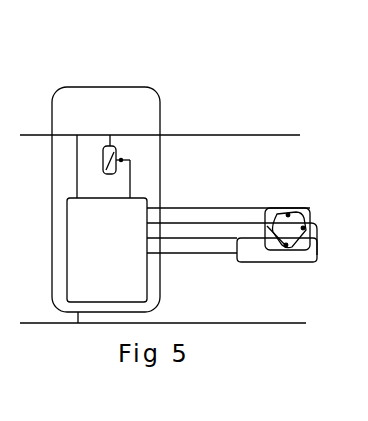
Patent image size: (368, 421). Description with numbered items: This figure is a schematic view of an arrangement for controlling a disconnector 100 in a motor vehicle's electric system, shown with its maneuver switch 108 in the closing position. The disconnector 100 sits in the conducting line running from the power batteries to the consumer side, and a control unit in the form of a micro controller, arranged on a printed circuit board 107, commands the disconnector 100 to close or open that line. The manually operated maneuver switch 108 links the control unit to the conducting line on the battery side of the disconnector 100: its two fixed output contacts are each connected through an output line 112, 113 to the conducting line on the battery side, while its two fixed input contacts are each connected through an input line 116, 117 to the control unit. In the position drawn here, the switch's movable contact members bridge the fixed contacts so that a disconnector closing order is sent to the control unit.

The disconnector 100 is at (96, 135).
The printed circuit board 107 is at (153, 268).
The maneuver switch 108 is at (298, 212).
The output line 112 is at (188, 207).
The output line 113 is at (214, 222).
The input line 116 is at (197, 253).
The input line 117 is at (238, 241).